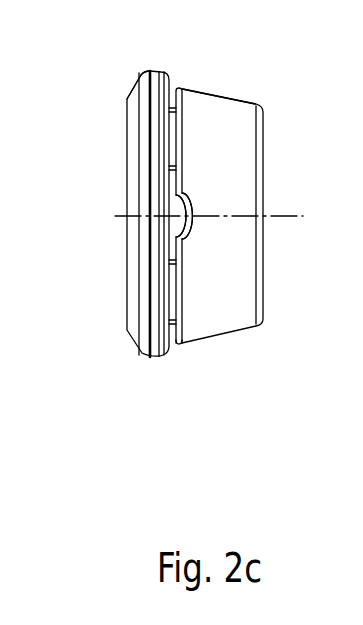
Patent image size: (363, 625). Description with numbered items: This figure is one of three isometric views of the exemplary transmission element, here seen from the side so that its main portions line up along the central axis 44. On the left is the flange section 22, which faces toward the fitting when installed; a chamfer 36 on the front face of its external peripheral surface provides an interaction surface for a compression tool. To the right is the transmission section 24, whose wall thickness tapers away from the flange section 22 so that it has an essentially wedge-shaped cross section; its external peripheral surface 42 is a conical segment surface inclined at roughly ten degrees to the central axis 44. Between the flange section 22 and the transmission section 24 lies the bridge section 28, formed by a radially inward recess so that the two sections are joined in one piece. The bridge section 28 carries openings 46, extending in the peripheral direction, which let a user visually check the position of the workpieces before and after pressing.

The flange section 22 is at (136, 369).
The transmission section 24 is at (242, 347).
The bridge section 28 is at (181, 368).
The chamfer 36 is at (124, 81).
The external peripheral surface 42 is at (220, 108).
The central axis 44 is at (293, 206).
The openings 46 is at (172, 187).